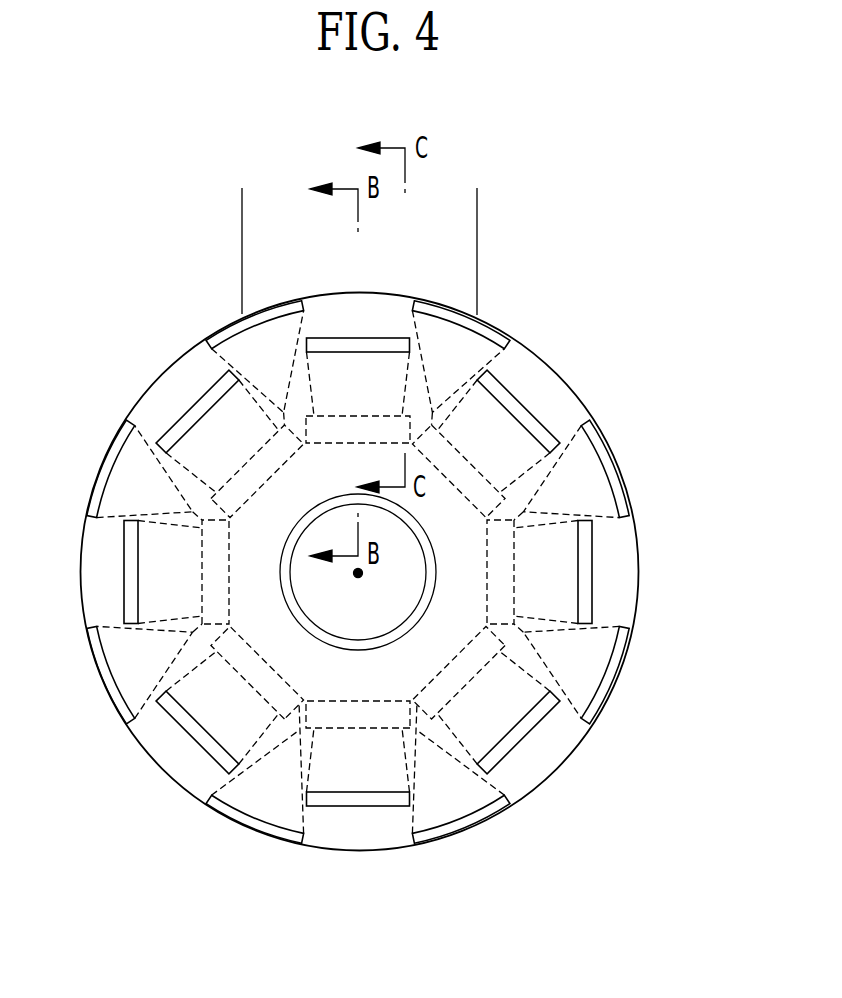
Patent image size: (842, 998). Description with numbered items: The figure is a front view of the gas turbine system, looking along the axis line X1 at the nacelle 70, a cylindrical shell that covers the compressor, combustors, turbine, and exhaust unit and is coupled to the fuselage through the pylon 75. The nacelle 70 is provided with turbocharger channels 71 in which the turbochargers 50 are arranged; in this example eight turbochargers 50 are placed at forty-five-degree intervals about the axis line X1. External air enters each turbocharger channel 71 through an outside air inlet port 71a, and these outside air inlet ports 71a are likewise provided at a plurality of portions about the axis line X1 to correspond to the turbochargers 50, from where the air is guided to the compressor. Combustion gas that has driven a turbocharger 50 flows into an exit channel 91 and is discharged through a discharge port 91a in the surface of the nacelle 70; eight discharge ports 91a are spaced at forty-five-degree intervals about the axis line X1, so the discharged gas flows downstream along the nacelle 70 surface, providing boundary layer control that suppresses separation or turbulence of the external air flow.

The nacelle 70 is at (152, 405).
The turbocharger channel 71 is at (313, 390).
The outside air inlet port 71a is at (387, 338).
The pylon 75 is at (477, 208).
The turbocharger 50 is at (217, 582).
The exit channel 91 is at (212, 348).
The discharge port 91a is at (253, 316).
The axis line X1 is at (362, 577).